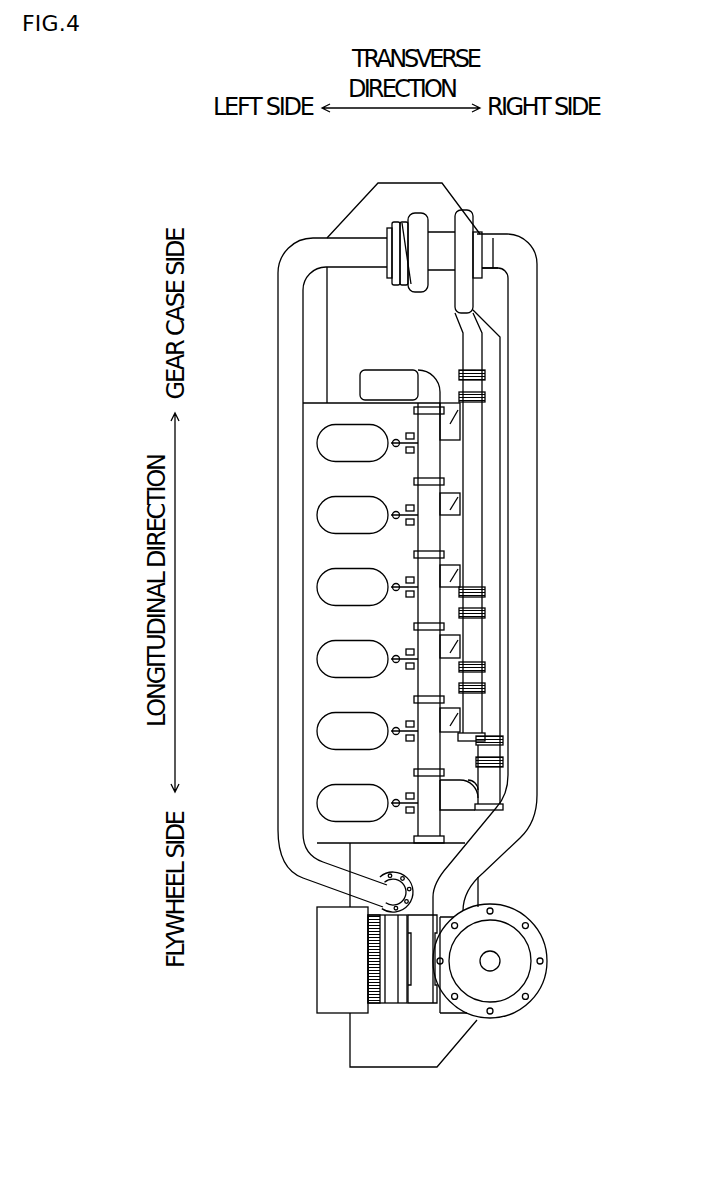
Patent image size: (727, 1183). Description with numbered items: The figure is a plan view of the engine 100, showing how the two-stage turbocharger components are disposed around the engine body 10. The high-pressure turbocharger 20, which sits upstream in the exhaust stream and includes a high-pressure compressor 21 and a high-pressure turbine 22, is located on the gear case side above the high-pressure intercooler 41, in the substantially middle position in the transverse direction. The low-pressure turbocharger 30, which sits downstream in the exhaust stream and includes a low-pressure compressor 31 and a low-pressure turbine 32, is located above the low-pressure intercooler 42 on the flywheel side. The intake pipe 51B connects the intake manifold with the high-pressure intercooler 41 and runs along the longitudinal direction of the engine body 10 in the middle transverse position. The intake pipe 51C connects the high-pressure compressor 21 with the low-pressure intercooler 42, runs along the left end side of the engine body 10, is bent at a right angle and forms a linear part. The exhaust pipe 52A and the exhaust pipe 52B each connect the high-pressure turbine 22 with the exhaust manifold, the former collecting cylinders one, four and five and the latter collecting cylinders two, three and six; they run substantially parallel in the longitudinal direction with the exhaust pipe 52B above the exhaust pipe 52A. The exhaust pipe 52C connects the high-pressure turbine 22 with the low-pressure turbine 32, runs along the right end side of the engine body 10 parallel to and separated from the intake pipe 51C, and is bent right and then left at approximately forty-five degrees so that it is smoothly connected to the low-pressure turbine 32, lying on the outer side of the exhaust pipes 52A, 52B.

The engine 100 is at (390, 622).
The engine body 10 is at (238, 605).
The high-pressure turbocharger 20 is at (426, 198).
The high-pressure compressor 21 is at (399, 291).
The high-pressure turbine 22 is at (468, 212).
The low-pressure turbocharger 30 is at (421, 1012).
The low-pressure compressor 31 is at (395, 1005).
The low-pressure turbine 32 is at (462, 1017).
The high-pressure intercooler 41 is at (395, 183).
The low-pressure intercooler 42 is at (380, 1066).
The intake pipe 51B is at (425, 675).
The intake pipe 51C is at (278, 482).
The exhaust pipe 52A is at (493, 708).
The exhaust pipe 52B is at (483, 647).
The exhaust pipe 52C is at (538, 478).